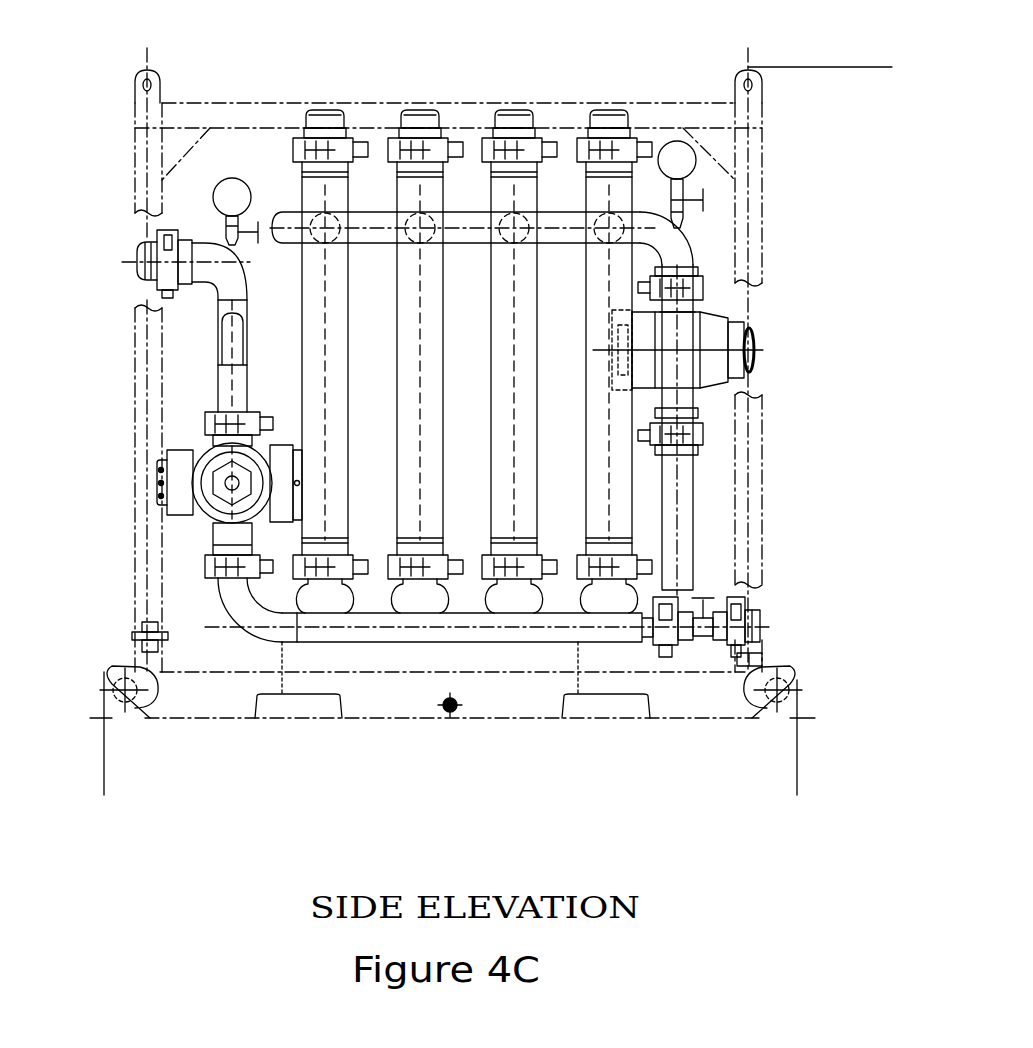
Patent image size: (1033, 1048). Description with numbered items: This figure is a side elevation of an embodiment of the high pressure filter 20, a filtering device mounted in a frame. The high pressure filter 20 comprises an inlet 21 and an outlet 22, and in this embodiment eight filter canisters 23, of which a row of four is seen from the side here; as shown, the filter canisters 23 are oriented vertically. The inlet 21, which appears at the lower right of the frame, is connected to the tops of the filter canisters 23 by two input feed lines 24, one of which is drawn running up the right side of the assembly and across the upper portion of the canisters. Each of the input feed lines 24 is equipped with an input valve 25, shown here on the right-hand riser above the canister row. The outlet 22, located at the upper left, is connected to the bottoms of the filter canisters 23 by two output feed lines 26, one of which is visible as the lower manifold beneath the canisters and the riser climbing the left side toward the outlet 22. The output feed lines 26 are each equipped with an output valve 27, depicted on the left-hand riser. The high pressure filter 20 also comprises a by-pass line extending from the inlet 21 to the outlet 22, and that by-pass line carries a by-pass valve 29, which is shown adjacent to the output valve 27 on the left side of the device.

The high pressure filter 20 is at (694, 93).
The inlet 21 is at (755, 610).
The outlet 22 is at (150, 270).
The filter canisters 23 is at (420, 108).
The input feed lines 24 is at (456, 222).
The input valve 25 is at (718, 330).
The output feed lines 26 is at (222, 337).
The output valve 27 is at (232, 505).
The by-pass valve 29 is at (180, 468).